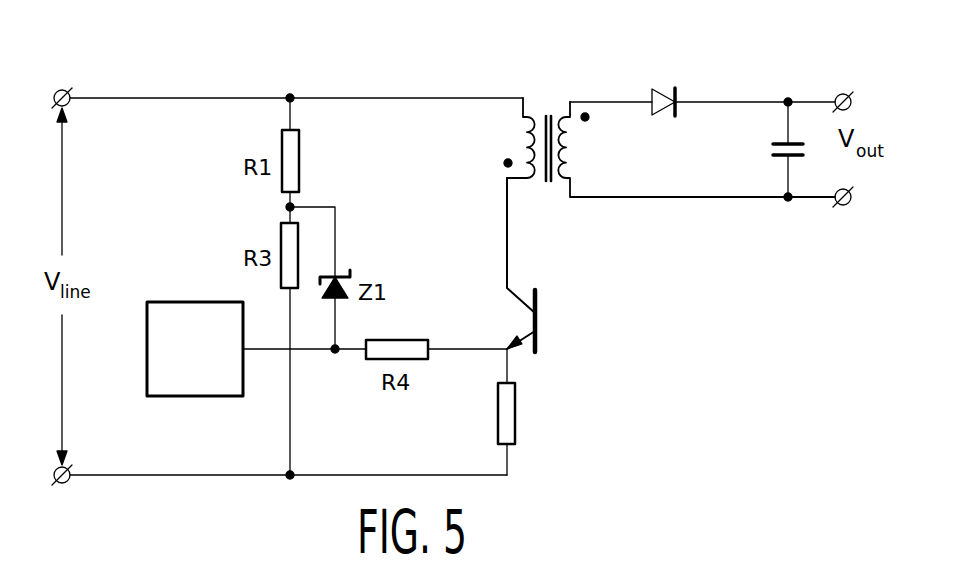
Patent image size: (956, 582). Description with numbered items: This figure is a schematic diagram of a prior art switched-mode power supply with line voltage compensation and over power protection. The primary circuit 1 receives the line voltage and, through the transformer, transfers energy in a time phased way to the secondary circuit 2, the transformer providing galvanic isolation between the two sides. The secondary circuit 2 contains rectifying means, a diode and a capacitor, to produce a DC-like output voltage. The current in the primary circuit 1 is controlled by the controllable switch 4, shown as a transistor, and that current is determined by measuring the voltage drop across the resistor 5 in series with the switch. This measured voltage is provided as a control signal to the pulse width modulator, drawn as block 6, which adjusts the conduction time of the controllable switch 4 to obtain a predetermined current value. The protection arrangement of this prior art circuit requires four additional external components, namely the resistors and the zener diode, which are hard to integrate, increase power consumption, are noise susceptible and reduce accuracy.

The primary circuit 1 is at (278, 98).
The secondary circuit 2 is at (713, 101).
The controllable switch 4 is at (538, 304).
The resistor 5 is at (515, 404).
The PWM controller 6 is at (197, 302).